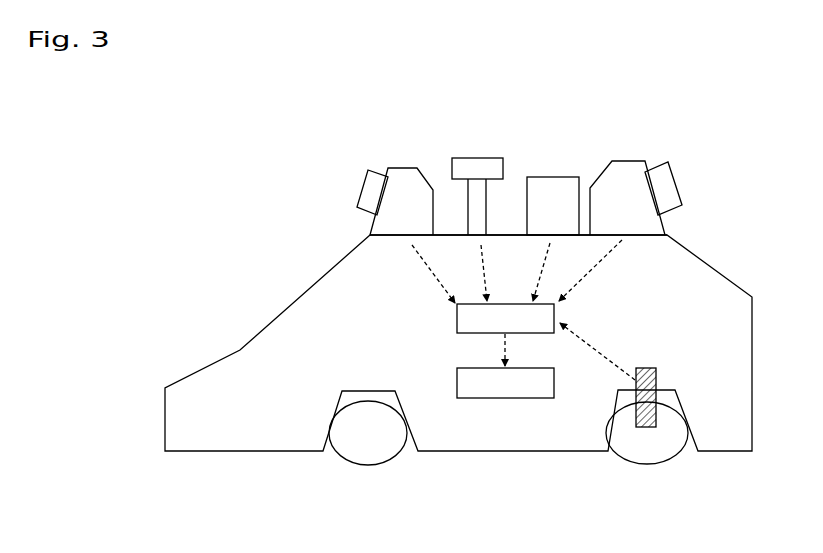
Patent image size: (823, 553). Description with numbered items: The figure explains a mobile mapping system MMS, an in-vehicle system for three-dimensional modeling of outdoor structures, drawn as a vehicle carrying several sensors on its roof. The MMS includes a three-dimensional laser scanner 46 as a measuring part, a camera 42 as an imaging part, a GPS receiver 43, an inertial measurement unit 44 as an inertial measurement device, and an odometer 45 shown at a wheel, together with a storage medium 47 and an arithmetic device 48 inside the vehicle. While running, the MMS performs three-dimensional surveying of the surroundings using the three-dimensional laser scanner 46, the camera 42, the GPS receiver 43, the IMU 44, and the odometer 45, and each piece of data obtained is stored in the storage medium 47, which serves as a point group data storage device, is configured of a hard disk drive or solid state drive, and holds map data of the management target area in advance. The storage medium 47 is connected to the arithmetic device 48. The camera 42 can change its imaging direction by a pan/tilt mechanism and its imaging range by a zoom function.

The mobile mapping system MMS is at (248, 290).
The camera 42 is at (363, 180).
The GPS receiver 43 is at (472, 157).
The inertial measurement unit 44 is at (550, 177).
The odometer 45 is at (646, 368).
The three-dimensional laser scanner 46 is at (630, 161).
The storage medium 47 is at (457, 322).
The arithmetic device 48 is at (457, 378).